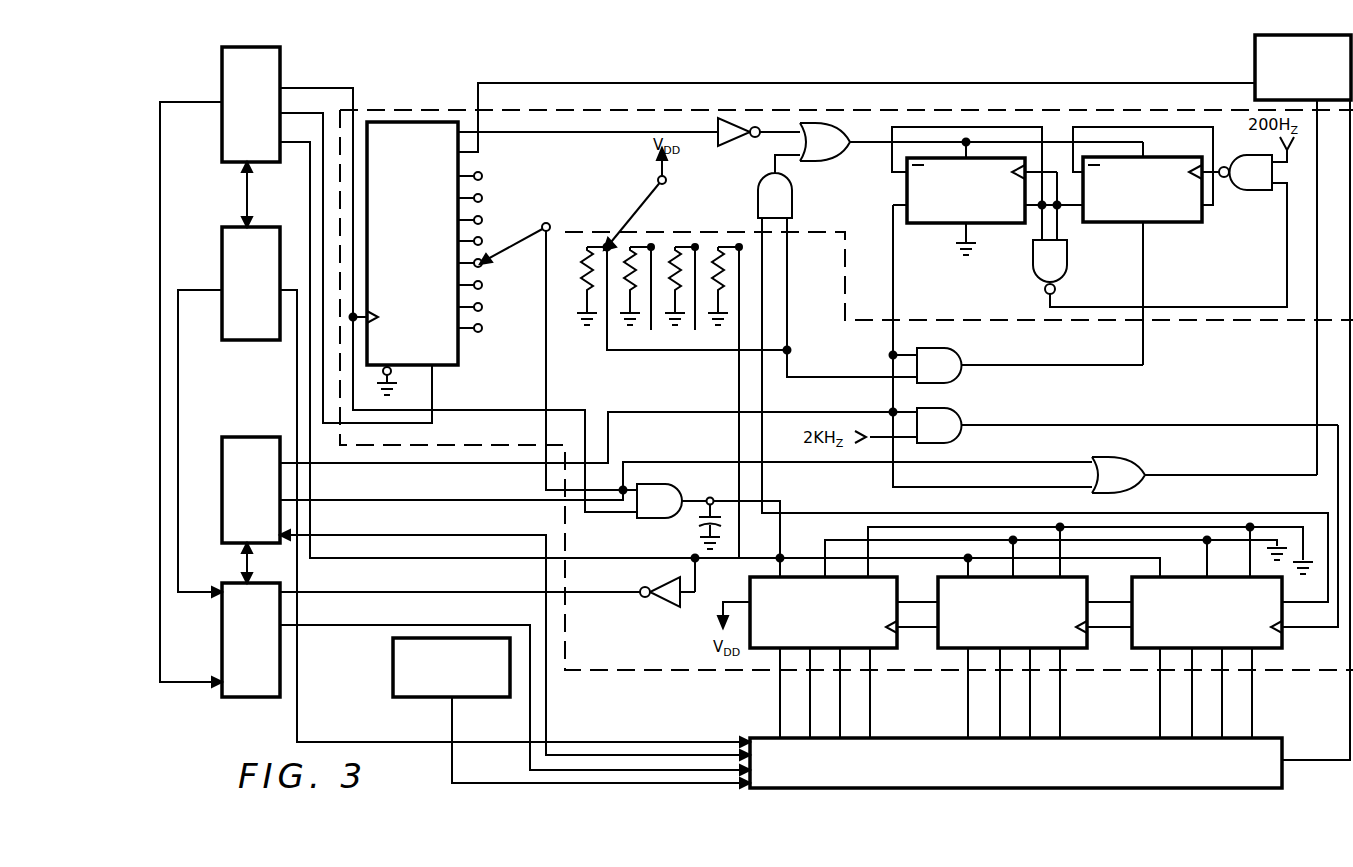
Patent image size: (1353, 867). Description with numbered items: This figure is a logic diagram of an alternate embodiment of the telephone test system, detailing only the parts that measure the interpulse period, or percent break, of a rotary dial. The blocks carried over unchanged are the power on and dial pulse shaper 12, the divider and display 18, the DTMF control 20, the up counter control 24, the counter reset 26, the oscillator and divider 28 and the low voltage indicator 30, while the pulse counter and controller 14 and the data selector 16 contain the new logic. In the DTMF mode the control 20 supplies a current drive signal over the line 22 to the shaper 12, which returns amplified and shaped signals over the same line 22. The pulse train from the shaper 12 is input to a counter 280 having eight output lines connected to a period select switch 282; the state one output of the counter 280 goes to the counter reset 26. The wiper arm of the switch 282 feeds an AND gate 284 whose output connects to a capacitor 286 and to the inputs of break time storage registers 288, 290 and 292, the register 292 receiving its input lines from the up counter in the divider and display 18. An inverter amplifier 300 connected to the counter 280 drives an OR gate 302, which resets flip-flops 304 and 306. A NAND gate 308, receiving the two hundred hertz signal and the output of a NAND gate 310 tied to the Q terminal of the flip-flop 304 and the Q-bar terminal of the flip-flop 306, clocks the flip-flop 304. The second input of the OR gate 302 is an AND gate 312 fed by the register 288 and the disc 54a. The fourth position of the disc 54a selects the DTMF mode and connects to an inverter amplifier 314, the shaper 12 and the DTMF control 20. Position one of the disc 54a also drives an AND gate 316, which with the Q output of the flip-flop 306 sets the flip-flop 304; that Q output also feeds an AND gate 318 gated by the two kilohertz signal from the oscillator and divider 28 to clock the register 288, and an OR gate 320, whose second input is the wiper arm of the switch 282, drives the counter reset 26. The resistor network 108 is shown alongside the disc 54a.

The power on and dial pulse shaper 12 is at (239, 96).
The pulse counter and controller 14 is at (594, 167).
The data selector 16 is at (1230, 377).
The divider and display 18 is at (1018, 775).
The DTMF control 20 is at (239, 632).
The line 22 is at (172, 690).
The up counter control 24 is at (239, 485).
The counter reset 26 is at (1293, 78).
The oscillator and divider 28 is at (239, 269).
The low voltage indicator 30 is at (440, 677).
The disc of the switch 54a is at (608, 214).
The resistor network 108 is at (640, 208).
The counter 280 is at (381, 221).
The period select switch 282 is at (496, 208).
The AND gate 284 is at (663, 494).
The capacitor 286 is at (700, 522).
The break time storage register 288 is at (1275, 647).
The break time storage register 290 is at (1073, 647).
The break time storage register 292 is at (883, 647).
The inverter amplifier 300 is at (732, 145).
The OR gate 302 is at (828, 150).
The flip-flop 304 is at (1172, 215).
The flip-flop 306 is at (935, 217).
The NAND gate 308 is at (1250, 182).
The NAND gate 310 is at (1055, 264).
The AND gate 312 is at (790, 203).
The inverter amplifier 314 is at (665, 595).
The AND gate 316 is at (950, 360).
The AND gate 318 is at (950, 420).
The OR gate 320 is at (1122, 468).